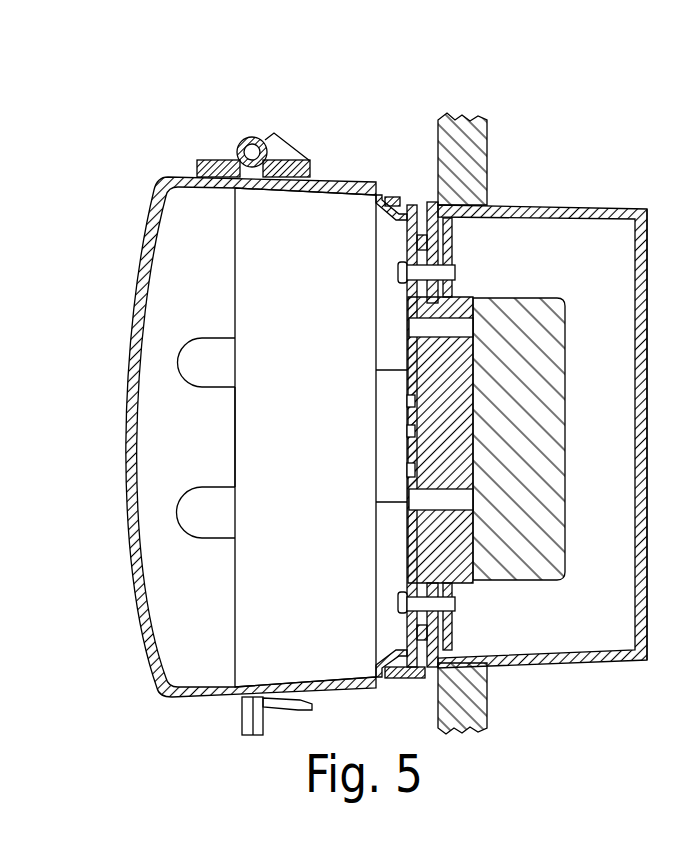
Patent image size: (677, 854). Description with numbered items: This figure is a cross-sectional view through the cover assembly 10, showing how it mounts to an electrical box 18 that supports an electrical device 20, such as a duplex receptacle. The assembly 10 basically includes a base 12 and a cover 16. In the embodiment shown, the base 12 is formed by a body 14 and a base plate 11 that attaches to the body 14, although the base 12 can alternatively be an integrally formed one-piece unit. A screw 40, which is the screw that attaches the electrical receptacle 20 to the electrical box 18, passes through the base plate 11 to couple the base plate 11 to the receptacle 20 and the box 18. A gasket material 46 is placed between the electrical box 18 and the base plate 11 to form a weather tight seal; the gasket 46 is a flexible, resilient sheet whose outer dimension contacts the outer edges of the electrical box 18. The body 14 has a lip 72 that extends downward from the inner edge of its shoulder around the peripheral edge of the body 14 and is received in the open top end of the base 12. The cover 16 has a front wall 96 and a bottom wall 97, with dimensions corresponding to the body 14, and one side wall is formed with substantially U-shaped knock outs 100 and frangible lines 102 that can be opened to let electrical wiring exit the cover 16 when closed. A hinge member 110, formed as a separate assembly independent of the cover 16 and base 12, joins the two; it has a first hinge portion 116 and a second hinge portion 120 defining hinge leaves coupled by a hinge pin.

The cover assembly 10 is at (571, 128).
The base plate 11 is at (397, 191).
The base 12 is at (416, 83).
The body 14 is at (350, 176).
The cover 16 is at (168, 177).
The electrical box 18 is at (592, 208).
The electrical device 20 is at (520, 292).
The screw 40 is at (398, 272).
The gasket material 46 is at (440, 172).
The lip 72 is at (388, 224).
The front wall 96 is at (132, 320).
The bottom wall 97 is at (190, 696).
The U-shaped knock outs 100 is at (208, 347).
The frangible lines 102 is at (197, 487).
The hinge member 110 is at (245, 132).
The first hinge portion 116 is at (197, 160).
The second hinge portion 120 is at (307, 158).